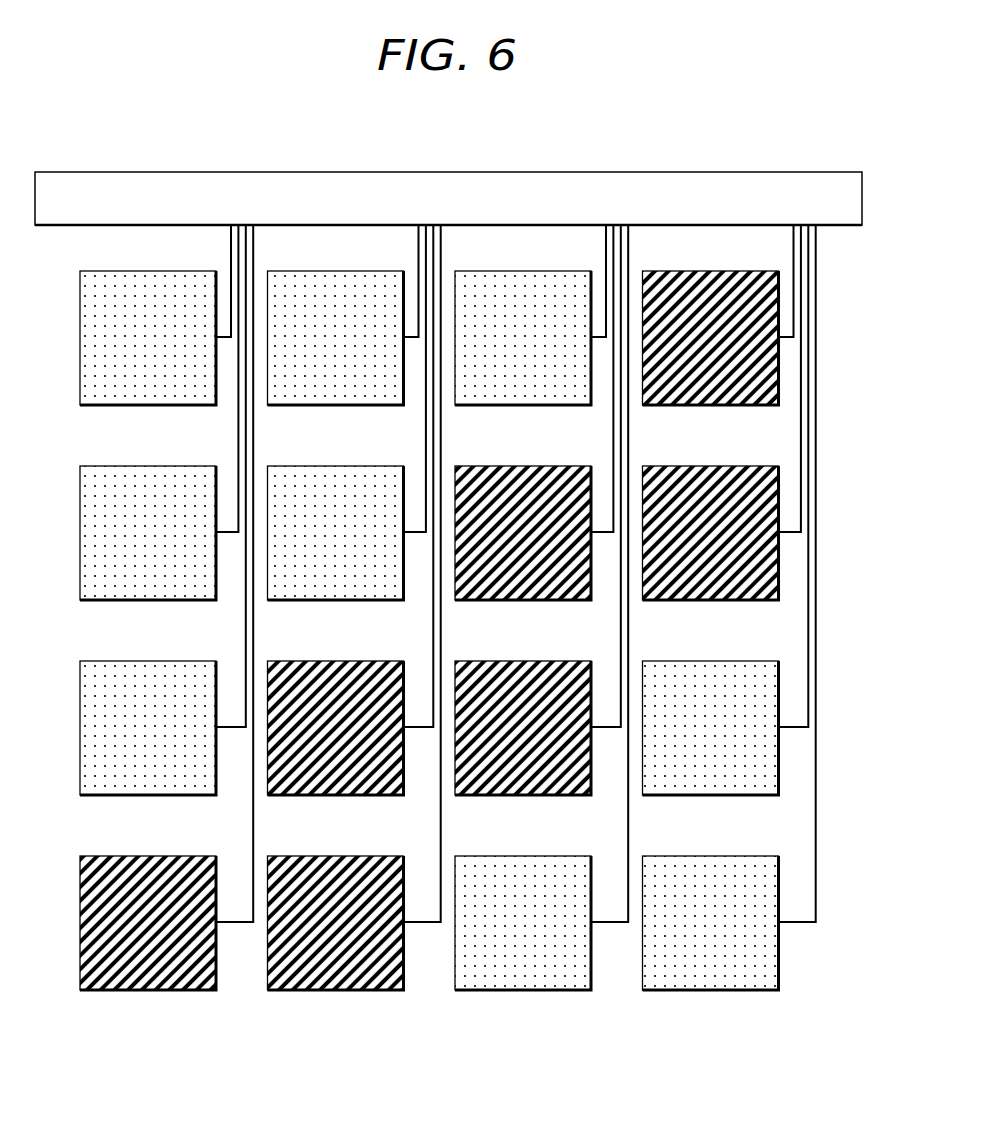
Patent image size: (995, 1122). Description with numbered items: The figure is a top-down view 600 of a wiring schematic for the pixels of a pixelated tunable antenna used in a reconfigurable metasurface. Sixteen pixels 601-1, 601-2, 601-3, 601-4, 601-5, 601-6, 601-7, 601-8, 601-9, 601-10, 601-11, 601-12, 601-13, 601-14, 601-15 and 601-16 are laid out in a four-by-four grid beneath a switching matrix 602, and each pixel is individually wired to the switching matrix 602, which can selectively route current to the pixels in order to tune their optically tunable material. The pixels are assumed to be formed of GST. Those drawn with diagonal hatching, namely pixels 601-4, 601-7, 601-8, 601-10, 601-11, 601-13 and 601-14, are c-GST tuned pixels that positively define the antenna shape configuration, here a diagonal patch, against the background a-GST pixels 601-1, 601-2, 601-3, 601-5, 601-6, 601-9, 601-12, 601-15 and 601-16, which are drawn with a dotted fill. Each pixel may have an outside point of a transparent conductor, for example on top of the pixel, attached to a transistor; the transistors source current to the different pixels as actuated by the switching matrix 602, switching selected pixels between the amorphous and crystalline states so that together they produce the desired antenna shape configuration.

The top-down view 600 is at (465, 117).
The switching matrix 602 is at (740, 172).
The pixel 601-1 is at (168, 405).
The pixel 601-2 is at (356, 405).
The pixel 601-3 is at (543, 405).
The pixel 601-4 is at (731, 405).
The pixel 601-5 is at (168, 600).
The pixel 601-6 is at (356, 600).
The pixel 601-7 is at (543, 600).
The pixel 601-8 is at (731, 600).
The pixel 601-9 is at (167, 795).
The pixel 601-10 is at (372, 795).
The pixel 601-11 is at (562, 795).
The pixel 601-12 is at (750, 795).
The pixel 601-13 is at (182, 990).
The pixel 601-14 is at (372, 990).
The pixel 601-15 is at (562, 990).
The pixel 601-16 is at (748, 990).